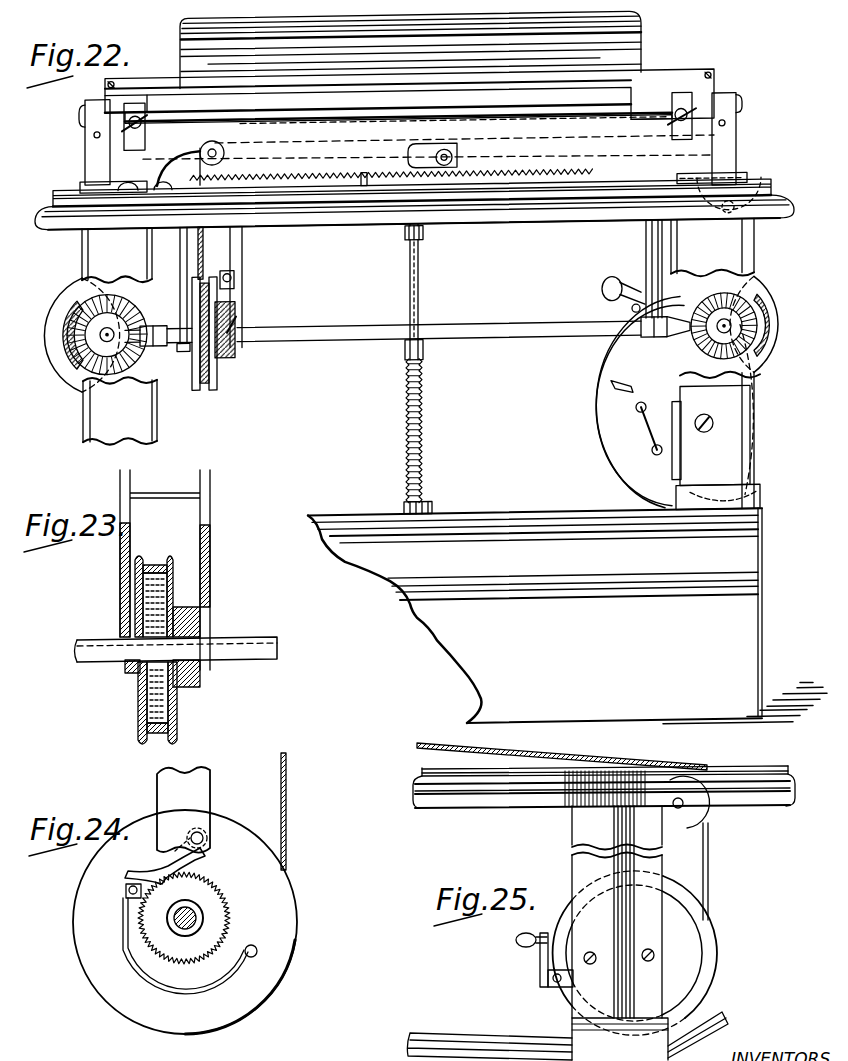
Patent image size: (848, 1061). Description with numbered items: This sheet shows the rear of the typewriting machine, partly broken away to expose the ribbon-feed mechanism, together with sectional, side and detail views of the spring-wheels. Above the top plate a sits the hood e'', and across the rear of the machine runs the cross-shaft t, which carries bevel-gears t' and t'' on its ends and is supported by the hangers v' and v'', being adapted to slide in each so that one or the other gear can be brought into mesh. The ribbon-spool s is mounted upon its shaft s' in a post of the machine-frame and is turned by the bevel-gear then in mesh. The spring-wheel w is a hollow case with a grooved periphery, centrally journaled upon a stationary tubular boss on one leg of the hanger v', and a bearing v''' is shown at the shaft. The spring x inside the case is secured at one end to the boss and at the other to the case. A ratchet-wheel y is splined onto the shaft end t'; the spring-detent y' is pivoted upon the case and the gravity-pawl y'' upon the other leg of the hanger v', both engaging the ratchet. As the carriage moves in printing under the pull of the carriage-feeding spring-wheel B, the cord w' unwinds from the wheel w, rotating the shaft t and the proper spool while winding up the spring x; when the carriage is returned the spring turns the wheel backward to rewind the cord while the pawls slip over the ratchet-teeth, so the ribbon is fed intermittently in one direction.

In FIG. 22, the hood or guard e'' is at (410, 49).
In FIG. 22, the top plate a is at (414, 214).
In FIG. 25, the top plate a is at (604, 799).
In FIG. 22, the ribbon-spool s is at (90, 335).
In FIG. 22, the ribbon-spool shaft s' is at (69, 356).
In FIG. 22, the cross-shaft t is at (407, 342).
In FIG. 23, the cross-shaft t is at (176, 660).
In FIG. 24, the cross-shaft t is at (217, 918).
In FIG. 22, the bevel-gear t' is at (632, 342).
In FIG. 22, the bevel-gear t'' is at (160, 362).
In FIG. 22, the hanger v' is at (242, 286).
In FIG. 24, the hanger v' is at (183, 810).
In FIG. 22, the hanger v'' is at (642, 269).
In FIG. 22, the bearing v''' is at (178, 299).
In FIG. 23, the bearing v''' is at (113, 684).
In FIG. 22, the spring-wheel w is at (207, 347).
In FIG. 23, the spring-wheel w is at (169, 703).
In FIG. 24, the spring-wheel w is at (185, 922).
In FIG. 22, the cord w' is at (211, 253).
In FIG. 24, the cord w' is at (294, 811).
In FIG. 23, the spring x is at (153, 577).
In FIG. 22, the ratchet-wheel y is at (232, 341).
In FIG. 23, the ratchet-wheel y is at (201, 661).
In FIG. 24, the ratchet-wheel y is at (184, 918).
In FIG. 22, the spring-detent y' is at (253, 317).
In FIG. 24, the spring-detent y' is at (175, 939).
In FIG. 22, the gravity-pawl y'' is at (250, 278).
In FIG. 24, the gravity-pawl y'' is at (160, 864).
In FIG. 22, the carriage-feeding spring-wheel B is at (668, 403).
In FIG. 25, the carriage-feeding spring-wheel B is at (648, 953).